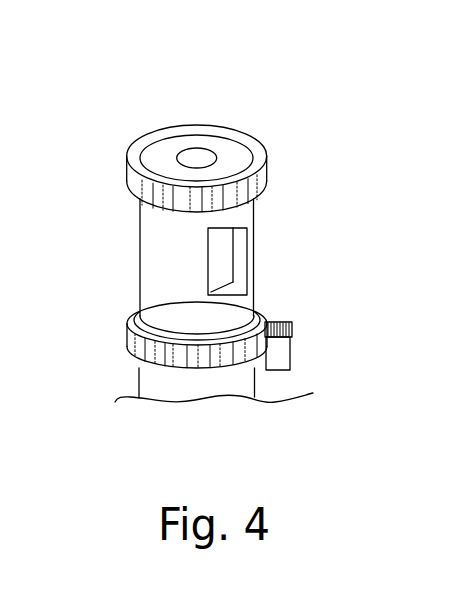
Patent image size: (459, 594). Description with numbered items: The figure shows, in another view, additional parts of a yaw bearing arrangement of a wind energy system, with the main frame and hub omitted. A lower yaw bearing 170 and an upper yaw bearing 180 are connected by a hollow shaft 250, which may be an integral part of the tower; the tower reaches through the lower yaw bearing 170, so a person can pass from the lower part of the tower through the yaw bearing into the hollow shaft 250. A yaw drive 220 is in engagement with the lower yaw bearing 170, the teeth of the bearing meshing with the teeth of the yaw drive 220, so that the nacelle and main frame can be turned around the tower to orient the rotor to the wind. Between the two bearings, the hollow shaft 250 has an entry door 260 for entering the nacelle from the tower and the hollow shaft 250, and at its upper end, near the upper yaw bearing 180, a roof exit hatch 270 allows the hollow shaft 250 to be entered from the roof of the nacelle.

The lower yaw bearing 170 is at (152, 379).
The upper yaw bearing 180 is at (195, 122).
The yaw drive 220 is at (290, 347).
The hollow shaft 250 is at (197, 327).
The entry door 260 is at (239, 342).
The roof exit hatch 270 is at (241, 100).